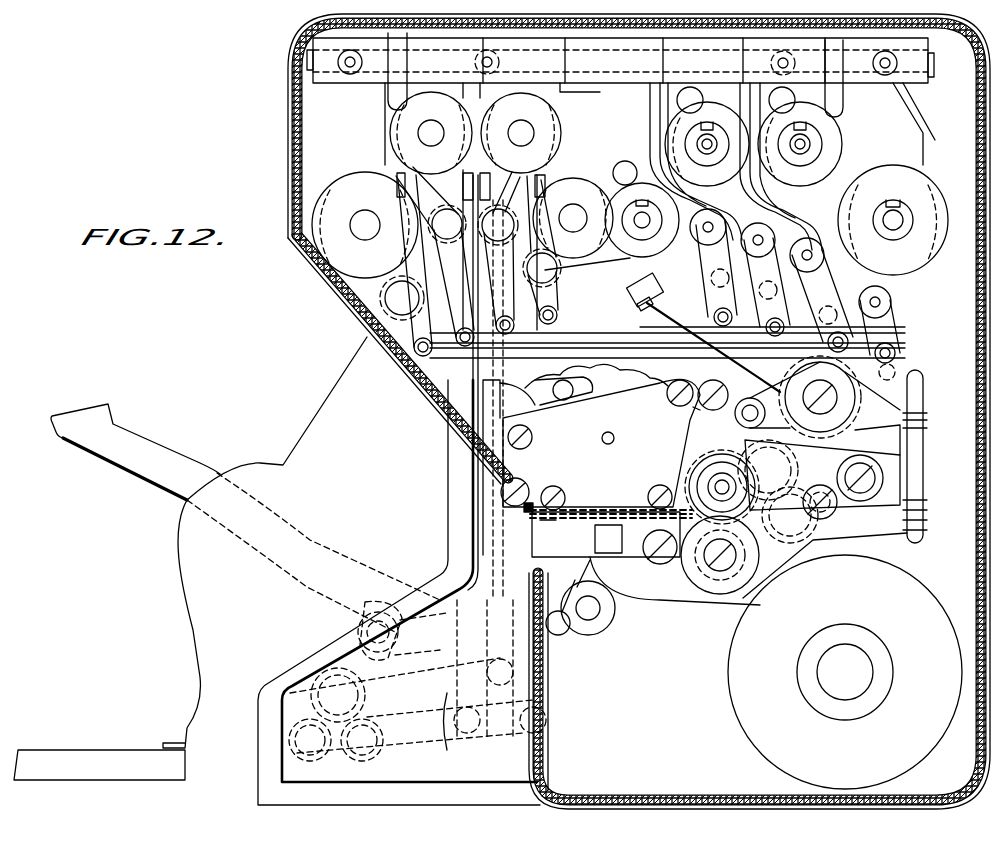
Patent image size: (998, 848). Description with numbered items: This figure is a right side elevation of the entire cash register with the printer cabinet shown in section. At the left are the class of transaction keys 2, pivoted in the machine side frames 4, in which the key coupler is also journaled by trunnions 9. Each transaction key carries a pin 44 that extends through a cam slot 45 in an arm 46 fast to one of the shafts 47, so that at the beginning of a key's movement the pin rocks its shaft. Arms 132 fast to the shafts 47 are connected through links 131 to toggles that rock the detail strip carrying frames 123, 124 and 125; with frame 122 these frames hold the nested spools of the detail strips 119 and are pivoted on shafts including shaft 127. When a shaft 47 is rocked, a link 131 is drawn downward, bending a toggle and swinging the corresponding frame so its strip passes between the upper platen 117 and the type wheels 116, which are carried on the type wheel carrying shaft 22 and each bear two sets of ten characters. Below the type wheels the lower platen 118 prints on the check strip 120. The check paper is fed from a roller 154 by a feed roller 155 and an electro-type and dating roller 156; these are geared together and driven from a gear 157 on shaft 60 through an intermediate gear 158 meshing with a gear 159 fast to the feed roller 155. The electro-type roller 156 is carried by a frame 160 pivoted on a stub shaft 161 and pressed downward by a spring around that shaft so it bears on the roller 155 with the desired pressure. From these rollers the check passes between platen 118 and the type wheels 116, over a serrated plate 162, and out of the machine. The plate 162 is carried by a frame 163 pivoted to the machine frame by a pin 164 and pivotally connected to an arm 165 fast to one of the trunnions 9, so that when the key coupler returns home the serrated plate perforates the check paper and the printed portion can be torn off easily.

The class of transaction keys 2 is at (133, 463).
The machine side frames 4 is at (318, 396).
The trunnions 9 is at (585, 627).
The type wheel carrying shaft 22 is at (606, 450).
The pins 44 is at (398, 632).
The cam slots 45 is at (367, 657).
The arms 46 is at (387, 678).
The shafts 47 is at (350, 733).
The shaft 60 is at (745, 497).
The type wheels 116 is at (617, 388).
The platen 117 is at (626, 288).
The platen 118 is at (647, 600).
The detail strips 119 is at (465, 350).
The check strip 120 is at (840, 543).
The frame 122 is at (340, 133).
The frame 123 is at (392, 170).
The frame 124 is at (560, 107).
The frame 125 is at (647, 83).
The shaft 127 is at (598, 80).
The links 131 is at (540, 435).
The arms 132 is at (447, 740).
The roller 154 is at (845, 643).
The feed roller 155 is at (703, 597).
The electro-type and dating roller 156 is at (688, 433).
The gear 157 is at (820, 513).
The intermediate gear 158 is at (766, 560).
The gear 159 is at (722, 587).
The frame 160 is at (833, 457).
The stub shaft 161 is at (870, 470).
The serrated plate 162 is at (520, 518).
The frame 163 is at (557, 543).
The pin 164 is at (657, 557).
The arm 165 is at (603, 633).